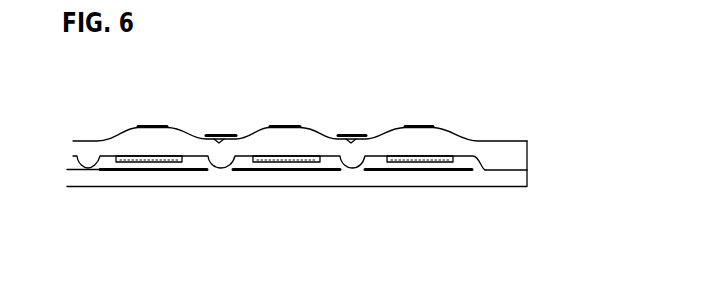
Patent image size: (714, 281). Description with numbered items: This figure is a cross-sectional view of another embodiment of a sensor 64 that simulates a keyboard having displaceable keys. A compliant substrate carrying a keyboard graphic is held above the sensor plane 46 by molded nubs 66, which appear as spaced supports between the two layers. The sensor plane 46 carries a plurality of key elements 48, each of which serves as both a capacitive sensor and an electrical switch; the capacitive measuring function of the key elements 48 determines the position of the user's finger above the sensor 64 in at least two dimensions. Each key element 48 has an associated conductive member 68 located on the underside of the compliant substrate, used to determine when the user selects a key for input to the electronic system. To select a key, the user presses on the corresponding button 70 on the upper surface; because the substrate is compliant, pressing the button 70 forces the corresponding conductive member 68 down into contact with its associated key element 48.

The sensor 64 is at (503, 136).
The button 70 is at (410, 137).
The molded nubs 66 is at (348, 170).
The conductive member 68 is at (437, 158).
The key elements 48 is at (420, 171).
The sensor plane 46 is at (495, 178).